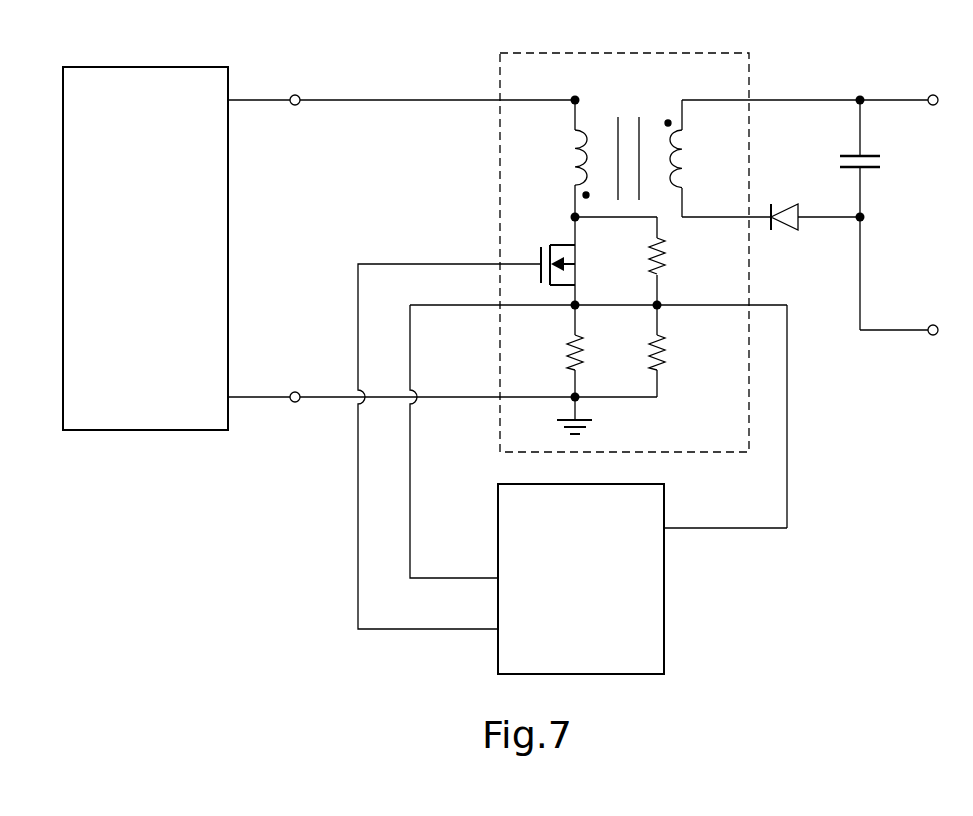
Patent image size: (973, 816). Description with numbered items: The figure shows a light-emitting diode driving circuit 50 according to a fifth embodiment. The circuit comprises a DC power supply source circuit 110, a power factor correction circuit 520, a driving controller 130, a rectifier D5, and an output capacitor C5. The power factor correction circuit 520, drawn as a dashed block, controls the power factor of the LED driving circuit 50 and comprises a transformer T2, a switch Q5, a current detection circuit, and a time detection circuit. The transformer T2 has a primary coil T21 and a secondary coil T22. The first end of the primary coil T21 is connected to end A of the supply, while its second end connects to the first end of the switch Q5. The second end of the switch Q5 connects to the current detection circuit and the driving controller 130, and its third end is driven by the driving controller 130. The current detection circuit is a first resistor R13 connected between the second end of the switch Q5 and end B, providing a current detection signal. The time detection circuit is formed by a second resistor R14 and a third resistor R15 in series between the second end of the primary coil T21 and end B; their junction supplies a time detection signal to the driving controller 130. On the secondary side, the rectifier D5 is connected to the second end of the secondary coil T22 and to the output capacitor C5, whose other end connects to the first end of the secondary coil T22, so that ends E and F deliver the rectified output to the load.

The LED driving circuit 50 is at (926, 628).
The DC power supply source circuit 110 is at (160, 296).
The driving controller 130 is at (565, 618).
The power factor correction circuit 520 is at (680, 53).
The transformer T2 is at (629, 98).
The primary coil T21 is at (560, 158).
The secondary coil T22 is at (696, 158).
The switch Q5 is at (548, 261).
The first resistor R13 is at (551, 352).
The second resistor R14 is at (679, 256).
The third resistor R15 is at (679, 352).
The rectifier D5 is at (784, 204).
The output capacitor C5 is at (871, 158).